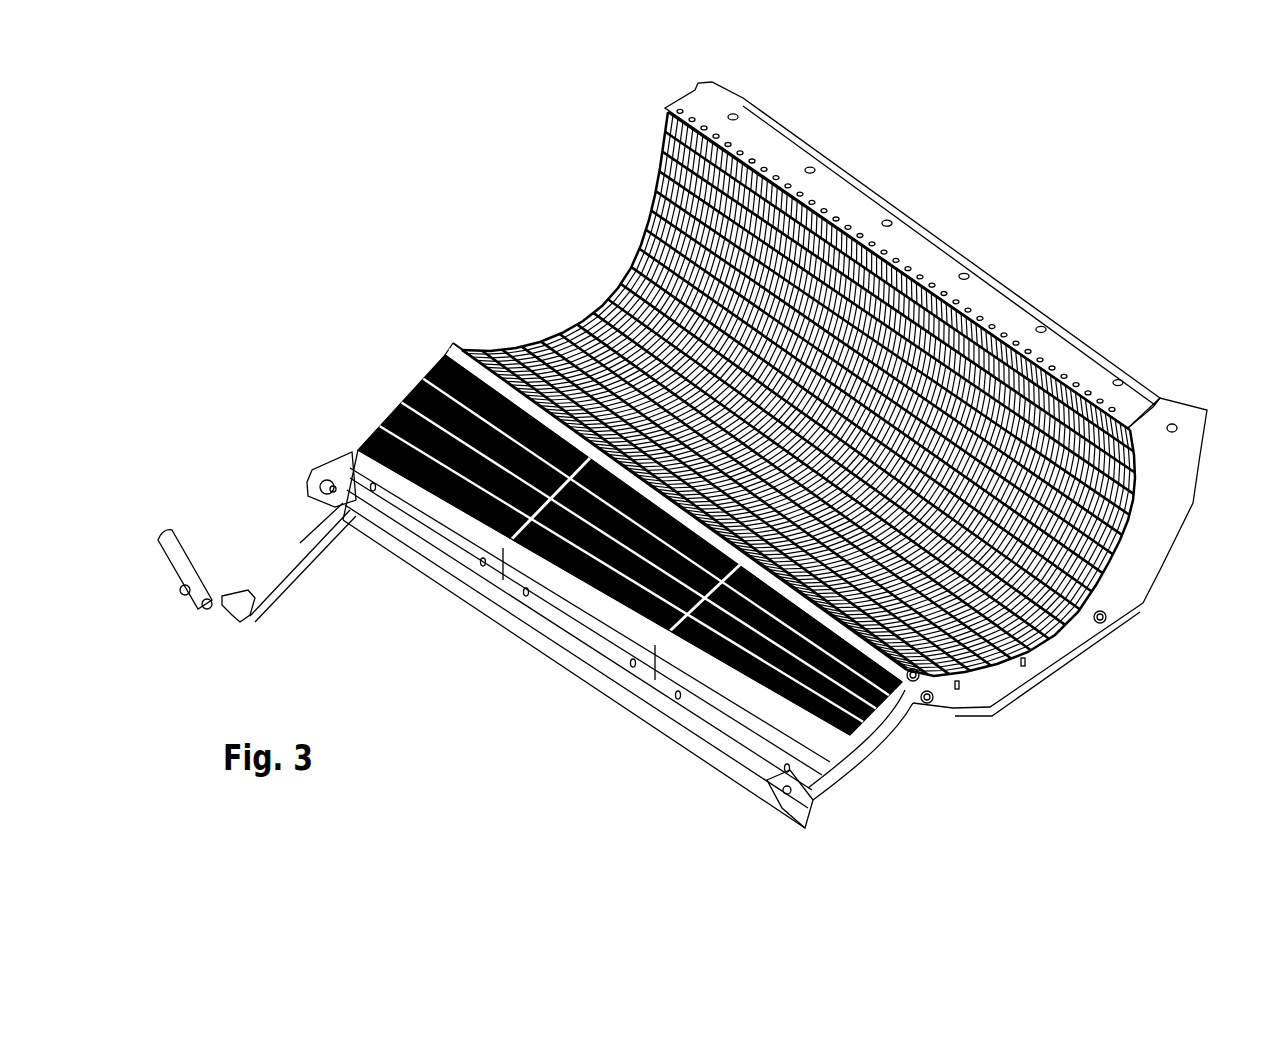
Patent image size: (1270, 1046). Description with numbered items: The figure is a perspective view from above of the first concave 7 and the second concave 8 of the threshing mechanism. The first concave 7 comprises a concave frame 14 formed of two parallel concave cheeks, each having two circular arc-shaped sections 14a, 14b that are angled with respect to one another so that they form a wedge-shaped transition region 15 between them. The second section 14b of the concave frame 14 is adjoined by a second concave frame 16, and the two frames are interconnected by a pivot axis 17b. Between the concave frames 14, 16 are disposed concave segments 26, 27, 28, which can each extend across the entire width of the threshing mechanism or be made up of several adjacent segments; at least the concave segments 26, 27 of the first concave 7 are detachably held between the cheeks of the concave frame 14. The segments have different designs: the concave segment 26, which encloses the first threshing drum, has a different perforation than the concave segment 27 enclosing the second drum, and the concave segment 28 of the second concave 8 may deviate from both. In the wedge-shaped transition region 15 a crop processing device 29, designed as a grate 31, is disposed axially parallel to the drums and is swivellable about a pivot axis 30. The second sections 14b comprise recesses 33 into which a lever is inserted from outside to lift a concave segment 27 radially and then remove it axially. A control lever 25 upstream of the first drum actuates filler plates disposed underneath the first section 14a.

The first concave 7 is at (330, 422).
The second concave 8 is at (838, 401).
The concave frame 14 is at (920, 722).
The first circular arc-shaped section 14a is at (840, 772).
The second circular arc-shaped section 14b is at (1000, 705).
The wedge-shaped transition region 15 is at (462, 338).
The second concave frame 16 is at (1160, 497).
The pivot axis 17b is at (1102, 626).
The control lever 25 is at (180, 545).
The concave segment 26 is at (560, 590).
The concave segment 27 is at (535, 343).
The concave segment 28 is at (665, 183).
The crop processing device 29 is at (448, 342).
The pivot axis 30 is at (930, 705).
The grate 31 is at (677, 512).
The recess 33 is at (958, 692).